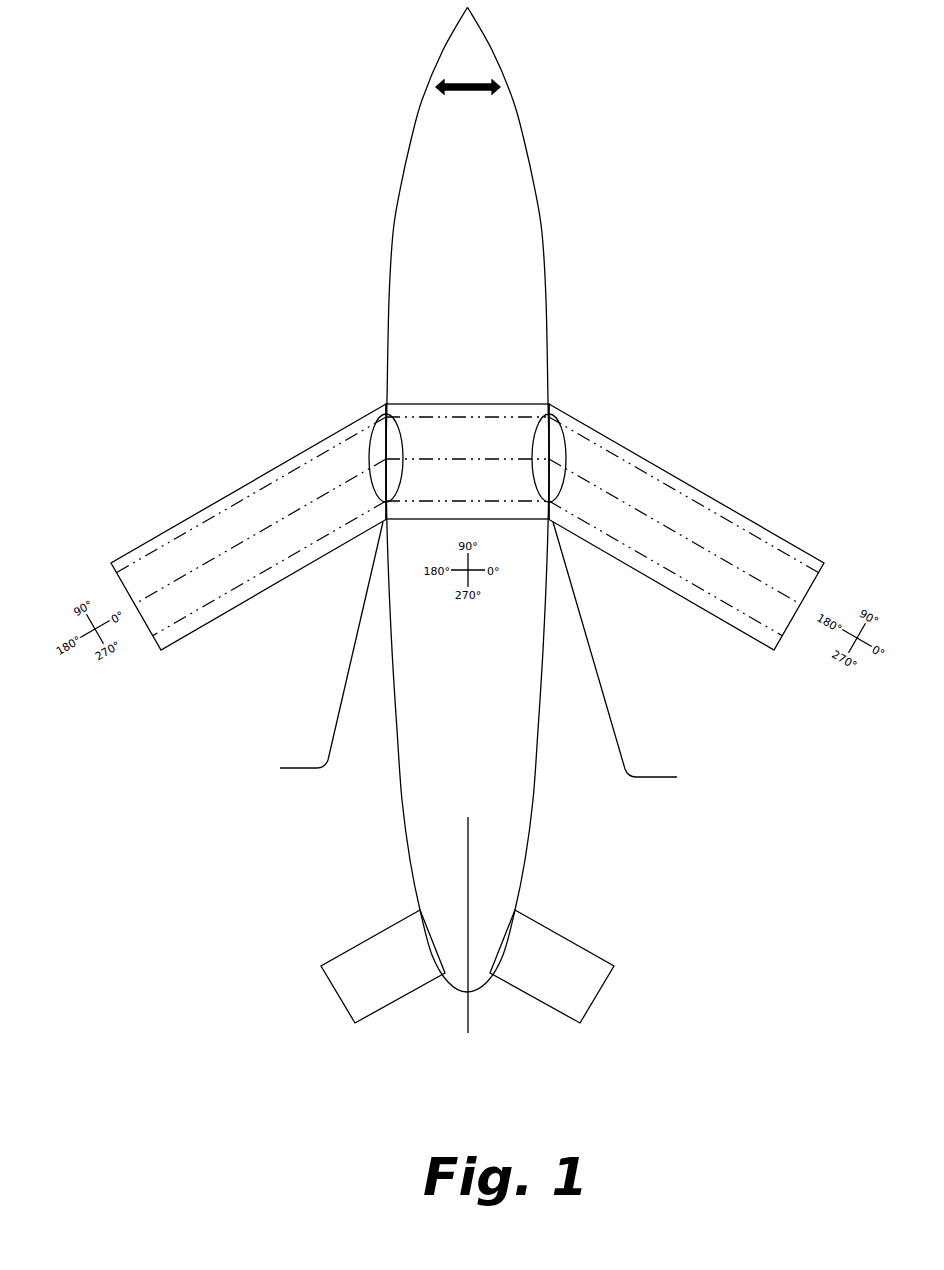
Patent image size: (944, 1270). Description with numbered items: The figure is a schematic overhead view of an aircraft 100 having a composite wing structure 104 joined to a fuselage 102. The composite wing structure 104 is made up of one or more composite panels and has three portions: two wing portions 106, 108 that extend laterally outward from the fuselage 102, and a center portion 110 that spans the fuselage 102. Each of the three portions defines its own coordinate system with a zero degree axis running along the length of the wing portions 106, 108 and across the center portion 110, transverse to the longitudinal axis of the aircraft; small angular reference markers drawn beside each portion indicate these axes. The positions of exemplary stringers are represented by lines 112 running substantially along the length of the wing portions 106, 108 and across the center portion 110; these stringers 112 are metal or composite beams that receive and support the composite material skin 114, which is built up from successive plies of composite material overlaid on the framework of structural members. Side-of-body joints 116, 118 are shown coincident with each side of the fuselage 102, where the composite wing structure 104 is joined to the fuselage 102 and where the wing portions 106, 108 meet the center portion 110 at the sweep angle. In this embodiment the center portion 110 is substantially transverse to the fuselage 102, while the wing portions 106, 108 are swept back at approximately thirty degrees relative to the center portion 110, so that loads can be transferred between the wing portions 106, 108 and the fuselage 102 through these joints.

The aircraft 100 is at (163, 54).
The fuselage 102 is at (393, 233).
The composite wing structure 104 is at (303, 370).
The wing portion 106 is at (237, 470).
The wing portion 108 is at (720, 460).
The center portion 110 is at (468, 388).
The stringers 112 is at (667, 570).
The composite material skin 114 is at (717, 535).
The side-of-body joint 116 is at (638, 656).
The side-of-body joint 118 is at (304, 651).